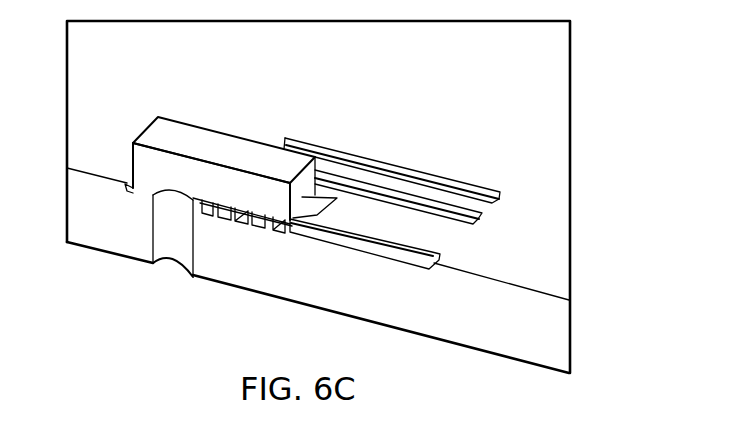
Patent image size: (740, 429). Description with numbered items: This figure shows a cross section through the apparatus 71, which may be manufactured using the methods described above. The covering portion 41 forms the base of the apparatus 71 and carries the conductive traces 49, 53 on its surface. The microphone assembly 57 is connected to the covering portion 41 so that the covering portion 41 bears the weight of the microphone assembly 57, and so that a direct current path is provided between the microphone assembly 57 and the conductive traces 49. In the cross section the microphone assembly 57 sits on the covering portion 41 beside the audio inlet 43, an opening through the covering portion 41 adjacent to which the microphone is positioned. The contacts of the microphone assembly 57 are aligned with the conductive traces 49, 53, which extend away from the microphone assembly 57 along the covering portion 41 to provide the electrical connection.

The apparatus 71 is at (570, 49).
The covering portion 41 is at (570, 100).
The audio inlet 43 is at (176, 264).
The microphone assembly 57 is at (132, 162).
The conductive traces 49 is at (461, 210).
The conductive trace 53 is at (390, 250).